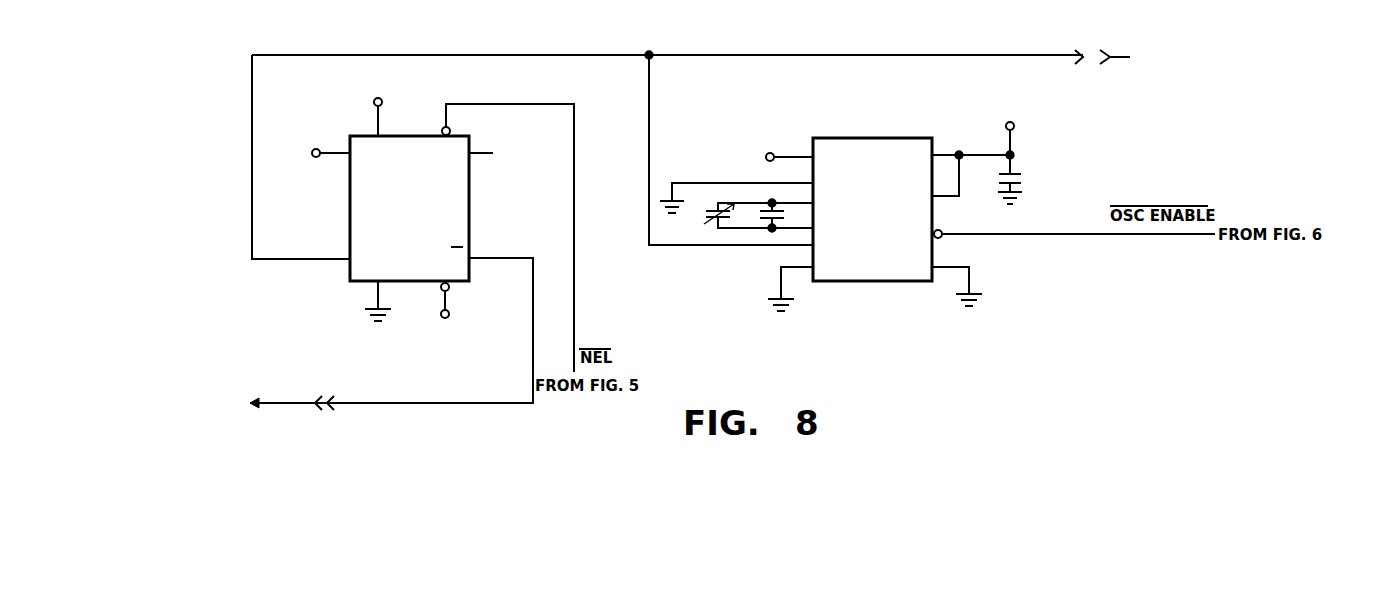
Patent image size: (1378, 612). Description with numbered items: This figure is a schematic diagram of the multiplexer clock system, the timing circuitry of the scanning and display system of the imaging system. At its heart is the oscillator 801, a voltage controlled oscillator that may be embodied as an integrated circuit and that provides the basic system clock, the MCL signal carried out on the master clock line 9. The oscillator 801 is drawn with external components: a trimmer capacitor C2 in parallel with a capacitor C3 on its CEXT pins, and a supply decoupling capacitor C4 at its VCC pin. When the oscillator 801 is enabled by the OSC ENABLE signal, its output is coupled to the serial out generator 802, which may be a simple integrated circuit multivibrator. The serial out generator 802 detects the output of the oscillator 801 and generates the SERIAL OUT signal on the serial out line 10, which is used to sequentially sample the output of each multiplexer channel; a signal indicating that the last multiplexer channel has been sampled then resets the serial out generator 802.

The master clock (MCL) line 9 is at (714, 48).
The serial out line 10 is at (359, 343).
The oscillator 801 is at (860, 138).
The serial out generator 802 is at (469, 212).
The trimmer capacitor C2 is at (715, 209).
The capacitor C3 is at (781, 215).
The capacitor C4 is at (1017, 172).